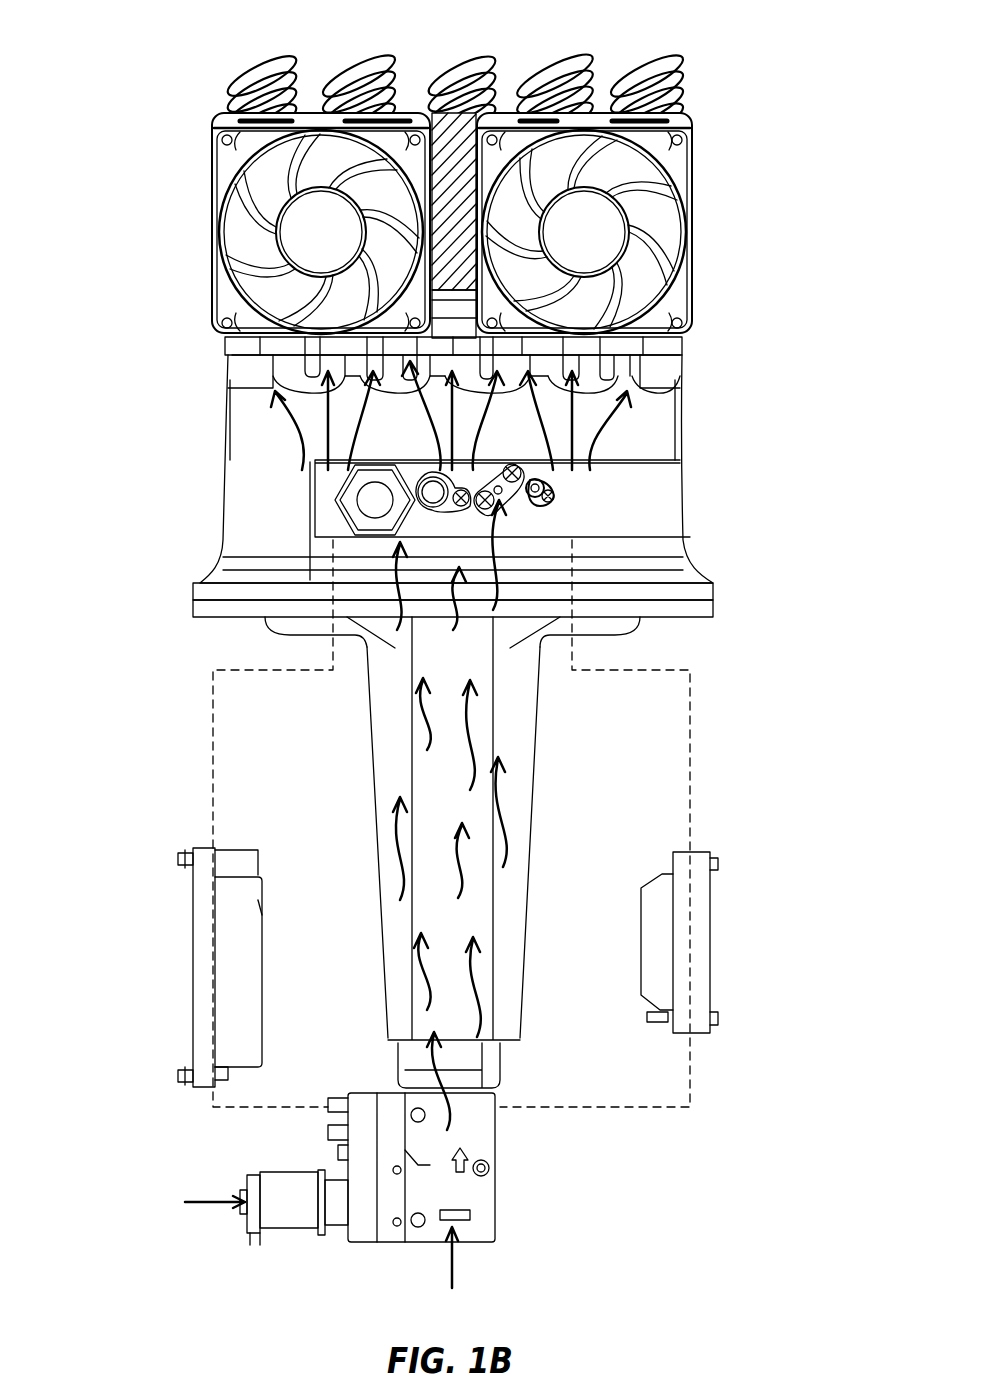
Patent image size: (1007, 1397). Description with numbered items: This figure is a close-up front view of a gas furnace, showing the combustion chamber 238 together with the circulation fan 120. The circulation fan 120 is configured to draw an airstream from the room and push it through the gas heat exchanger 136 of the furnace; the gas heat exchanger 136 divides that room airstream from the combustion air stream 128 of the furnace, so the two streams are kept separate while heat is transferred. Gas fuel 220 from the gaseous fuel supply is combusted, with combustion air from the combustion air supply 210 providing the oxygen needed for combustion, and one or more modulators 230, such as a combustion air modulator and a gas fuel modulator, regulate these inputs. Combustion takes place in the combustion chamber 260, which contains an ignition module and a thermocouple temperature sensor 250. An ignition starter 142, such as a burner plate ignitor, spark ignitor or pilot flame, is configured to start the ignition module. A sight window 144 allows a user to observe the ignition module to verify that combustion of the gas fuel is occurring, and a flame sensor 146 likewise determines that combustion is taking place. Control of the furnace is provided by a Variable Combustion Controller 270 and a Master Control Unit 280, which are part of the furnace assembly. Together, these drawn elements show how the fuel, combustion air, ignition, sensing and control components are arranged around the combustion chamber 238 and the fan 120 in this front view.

The circulation fan 120 is at (310, 238).
The combustion air stream 128 is at (573, 412).
The gas heat exchanger 136 is at (223, 84).
The ignition starter 142 is at (505, 497).
The sight window 144 is at (375, 502).
The flame sensor 146 is at (562, 488).
The combustion air supply 210 is at (215, 1202).
The gaseous fuel supply 220 is at (452, 1258).
The modulator 230 is at (397, 1197).
The combustion chamber 238 is at (480, 887).
The thermocouple temperature sensor 250 is at (432, 488).
The combustion chamber 260 is at (520, 435).
The Variable Combustion Controller 270 is at (688, 938).
The Master Control Unit 280 is at (208, 963).